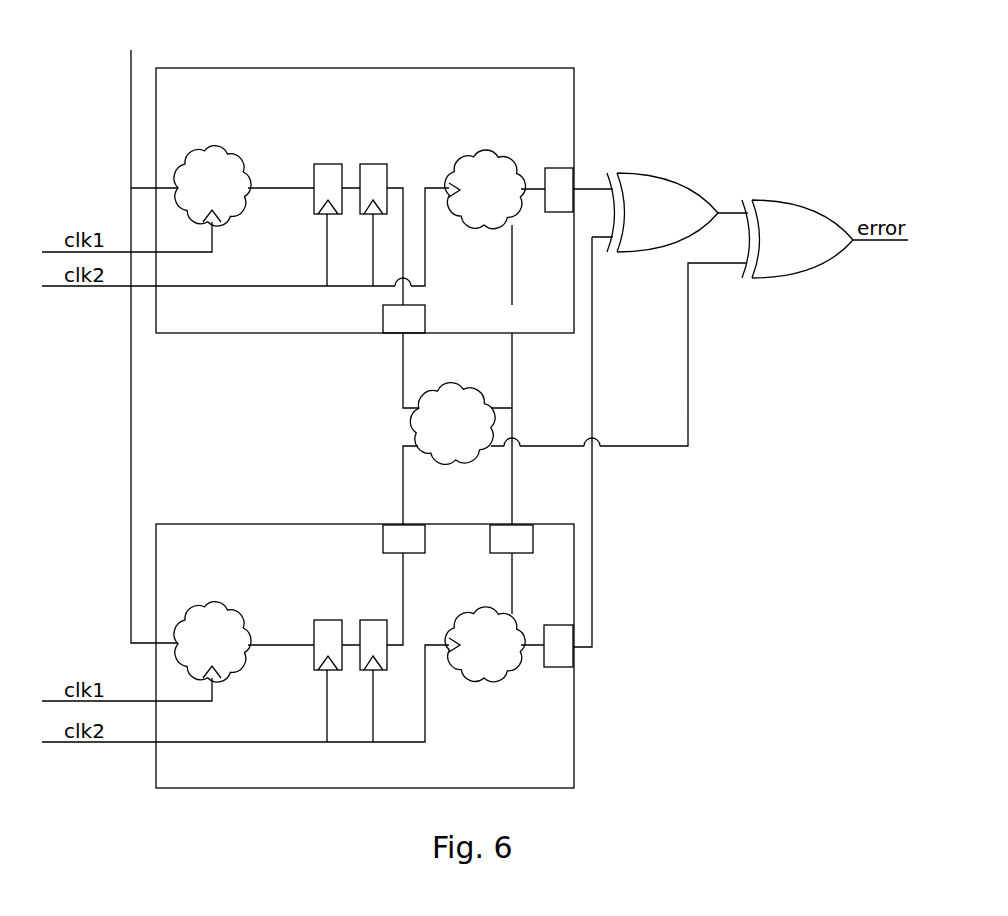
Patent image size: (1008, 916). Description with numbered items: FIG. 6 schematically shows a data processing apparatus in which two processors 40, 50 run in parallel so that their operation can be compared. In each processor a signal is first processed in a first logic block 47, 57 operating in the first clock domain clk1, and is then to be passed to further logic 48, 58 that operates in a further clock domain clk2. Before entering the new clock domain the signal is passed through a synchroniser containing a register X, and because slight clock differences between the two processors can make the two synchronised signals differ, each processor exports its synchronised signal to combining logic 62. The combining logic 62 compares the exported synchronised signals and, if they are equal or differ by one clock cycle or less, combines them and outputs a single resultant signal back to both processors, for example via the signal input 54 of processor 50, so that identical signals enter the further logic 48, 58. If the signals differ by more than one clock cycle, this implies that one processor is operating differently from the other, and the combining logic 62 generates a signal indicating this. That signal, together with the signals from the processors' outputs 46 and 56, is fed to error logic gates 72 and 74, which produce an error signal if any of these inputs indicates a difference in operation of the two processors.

The processor 40 is at (525, 68).
The output 46 is at (568, 175).
The first logic block 47 is at (242, 206).
The further logic 48 is at (497, 155).
The processor 50 is at (574, 727).
The signal input 54 is at (523, 530).
The output 56 is at (567, 657).
The first logic block 57 is at (242, 662).
The further logic 58 is at (480, 680).
The combining logic 62 is at (412, 420).
The error logic gate 72 is at (677, 175).
The error logic gate 74 is at (815, 202).